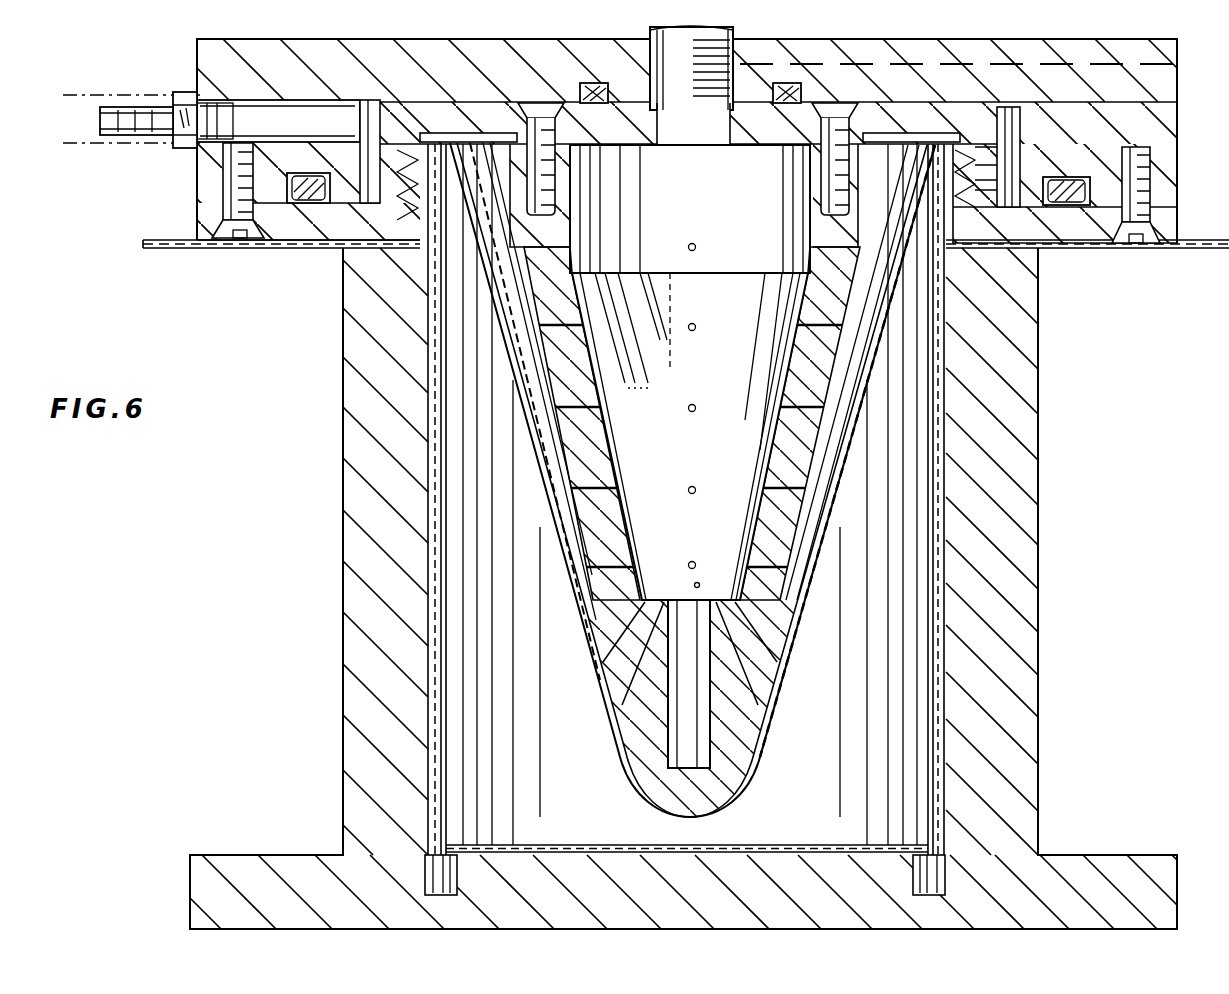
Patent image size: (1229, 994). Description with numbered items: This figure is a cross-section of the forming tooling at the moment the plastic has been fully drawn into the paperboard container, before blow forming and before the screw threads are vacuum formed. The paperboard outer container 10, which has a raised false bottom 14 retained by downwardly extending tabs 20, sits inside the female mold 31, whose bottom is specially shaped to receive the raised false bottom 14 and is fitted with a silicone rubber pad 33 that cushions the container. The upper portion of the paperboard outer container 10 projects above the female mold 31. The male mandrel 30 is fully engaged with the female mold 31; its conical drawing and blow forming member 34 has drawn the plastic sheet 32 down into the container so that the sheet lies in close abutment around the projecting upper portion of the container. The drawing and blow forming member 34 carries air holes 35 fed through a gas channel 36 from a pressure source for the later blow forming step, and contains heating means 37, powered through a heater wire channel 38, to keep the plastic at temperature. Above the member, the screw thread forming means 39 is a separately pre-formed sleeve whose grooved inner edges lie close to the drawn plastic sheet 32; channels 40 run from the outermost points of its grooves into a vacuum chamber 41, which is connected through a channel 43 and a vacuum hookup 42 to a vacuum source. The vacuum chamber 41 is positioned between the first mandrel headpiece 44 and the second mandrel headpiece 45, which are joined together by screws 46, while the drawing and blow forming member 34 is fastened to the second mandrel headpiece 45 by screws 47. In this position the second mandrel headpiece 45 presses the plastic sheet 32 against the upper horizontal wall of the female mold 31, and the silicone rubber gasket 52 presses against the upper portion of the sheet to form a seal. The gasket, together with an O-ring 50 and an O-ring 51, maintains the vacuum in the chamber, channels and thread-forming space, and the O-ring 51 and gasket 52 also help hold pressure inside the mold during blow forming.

The paperboard outer container 10 is at (430, 508).
The false bottom 14 is at (795, 845).
The tabs 20 is at (425, 860).
The male mandrel 30 is at (197, 66).
The female mold 31 is at (343, 636).
The plastic sheet 32 is at (184, 248).
The pad 33 is at (443, 895).
The drawing and blow forming member 34 is at (582, 450).
The air holes 35 is at (686, 409).
The gas channel 36 is at (648, 82).
The heating means 37 is at (688, 683).
The heater wire channel 38 is at (1168, 52).
The screw thread forming means 39 is at (405, 130).
The channels 40 is at (996, 160).
The vacuum chamber 41 is at (393, 102).
The vacuum hookup 42 is at (142, 100).
The channel 43 is at (293, 103).
The first mandrel headpiece 44 is at (1130, 104).
The second mandrel headpiece 45 is at (1073, 240).
The screws 46 is at (222, 213).
The screws 47 is at (560, 165).
The O-ring 50 is at (306, 205).
The O-ring 51 is at (580, 92).
The silicone rubber gasket 52 is at (478, 130).